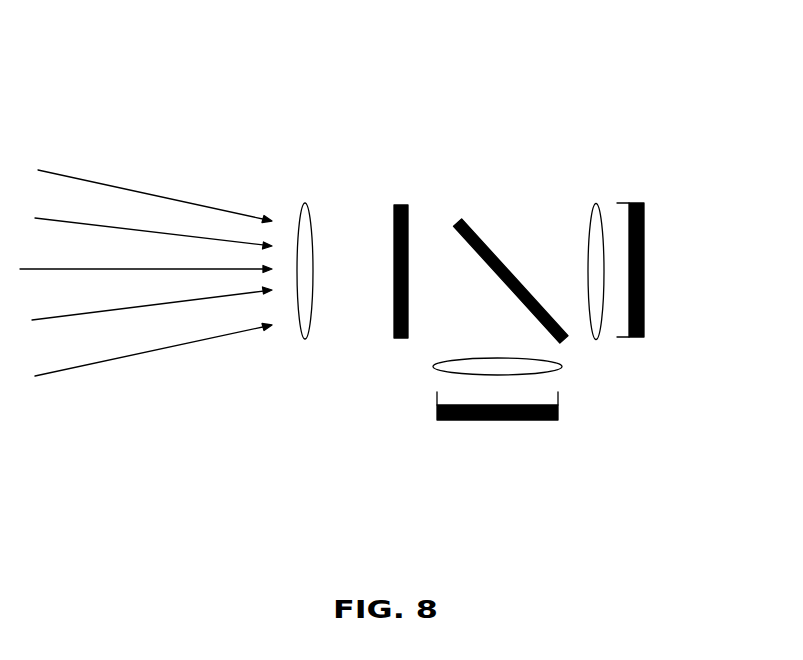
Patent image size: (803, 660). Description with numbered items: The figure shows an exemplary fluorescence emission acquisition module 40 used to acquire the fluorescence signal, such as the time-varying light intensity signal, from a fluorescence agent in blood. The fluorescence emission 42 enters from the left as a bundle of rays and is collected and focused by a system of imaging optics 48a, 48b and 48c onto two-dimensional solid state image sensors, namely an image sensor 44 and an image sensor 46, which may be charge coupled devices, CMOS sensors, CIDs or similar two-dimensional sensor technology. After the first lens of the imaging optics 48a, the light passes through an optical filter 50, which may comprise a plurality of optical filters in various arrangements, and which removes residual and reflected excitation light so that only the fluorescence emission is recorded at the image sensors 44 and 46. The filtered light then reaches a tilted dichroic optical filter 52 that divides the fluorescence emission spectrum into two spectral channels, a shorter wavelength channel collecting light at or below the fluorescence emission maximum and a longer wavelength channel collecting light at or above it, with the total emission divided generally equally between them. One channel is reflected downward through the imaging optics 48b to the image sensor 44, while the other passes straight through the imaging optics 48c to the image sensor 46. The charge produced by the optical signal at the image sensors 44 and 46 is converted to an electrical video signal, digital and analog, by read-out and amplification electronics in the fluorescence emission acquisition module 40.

The fluorescence emission acquisition module 40 is at (672, 68).
The fluorescence emission 42 is at (140, 191).
The image sensor 44 is at (435, 410).
The image sensor 46 is at (644, 252).
The imaging optics 48a is at (305, 203).
The imaging optics 48b is at (435, 366).
The imaging optics 48c is at (595, 203).
The optical filter 50 is at (393, 257).
The dichroic optical filter 52 is at (468, 220).